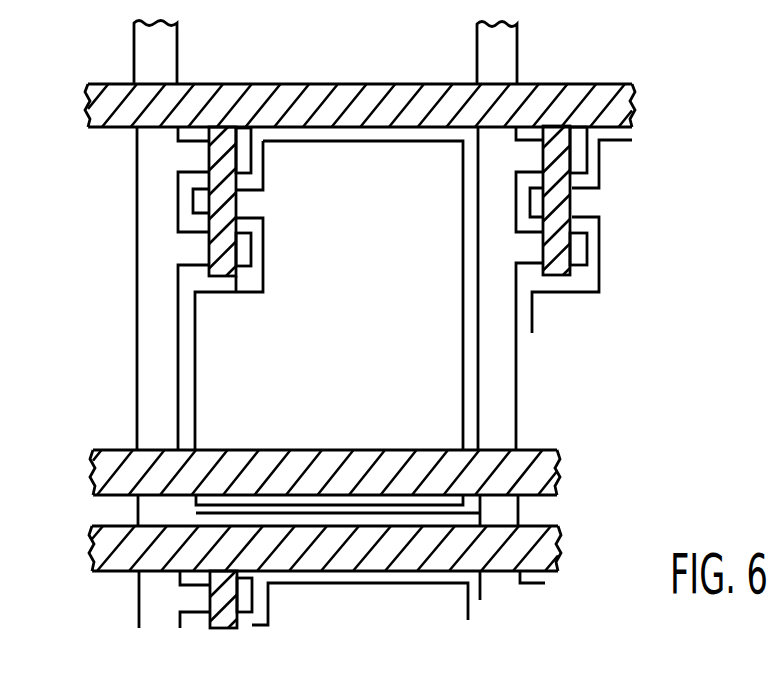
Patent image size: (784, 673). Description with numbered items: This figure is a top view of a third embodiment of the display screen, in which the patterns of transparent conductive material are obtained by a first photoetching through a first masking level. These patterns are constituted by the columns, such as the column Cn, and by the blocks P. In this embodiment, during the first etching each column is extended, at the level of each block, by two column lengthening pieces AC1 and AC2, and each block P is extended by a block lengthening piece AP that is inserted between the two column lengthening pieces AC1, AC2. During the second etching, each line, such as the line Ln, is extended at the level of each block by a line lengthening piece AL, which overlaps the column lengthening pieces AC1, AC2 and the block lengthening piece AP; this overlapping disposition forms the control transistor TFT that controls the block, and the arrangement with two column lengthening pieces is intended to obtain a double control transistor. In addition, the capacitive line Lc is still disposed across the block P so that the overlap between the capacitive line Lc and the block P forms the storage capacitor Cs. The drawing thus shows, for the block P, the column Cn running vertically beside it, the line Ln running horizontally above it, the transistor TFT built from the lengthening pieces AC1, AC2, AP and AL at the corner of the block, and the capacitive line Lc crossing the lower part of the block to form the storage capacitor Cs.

The column Cn is at (147, 53).
The line Ln is at (118, 115).
The capacitive line Lc is at (115, 468).
The storage capacitor Cs is at (310, 438).
The block P is at (407, 418).
The transistor TFT is at (278, 234).
The column lengthening piece AC1 is at (241, 152).
The column lengthening piece AC2 is at (243, 265).
The block lengthening piece AP is at (198, 209).
The line lengthening piece AL is at (225, 266).